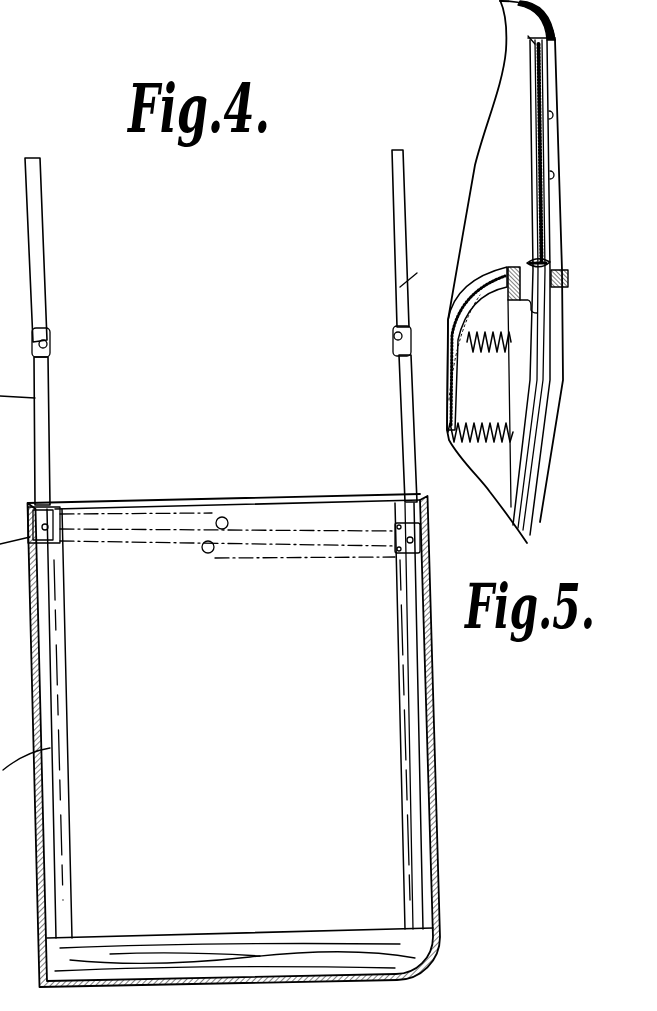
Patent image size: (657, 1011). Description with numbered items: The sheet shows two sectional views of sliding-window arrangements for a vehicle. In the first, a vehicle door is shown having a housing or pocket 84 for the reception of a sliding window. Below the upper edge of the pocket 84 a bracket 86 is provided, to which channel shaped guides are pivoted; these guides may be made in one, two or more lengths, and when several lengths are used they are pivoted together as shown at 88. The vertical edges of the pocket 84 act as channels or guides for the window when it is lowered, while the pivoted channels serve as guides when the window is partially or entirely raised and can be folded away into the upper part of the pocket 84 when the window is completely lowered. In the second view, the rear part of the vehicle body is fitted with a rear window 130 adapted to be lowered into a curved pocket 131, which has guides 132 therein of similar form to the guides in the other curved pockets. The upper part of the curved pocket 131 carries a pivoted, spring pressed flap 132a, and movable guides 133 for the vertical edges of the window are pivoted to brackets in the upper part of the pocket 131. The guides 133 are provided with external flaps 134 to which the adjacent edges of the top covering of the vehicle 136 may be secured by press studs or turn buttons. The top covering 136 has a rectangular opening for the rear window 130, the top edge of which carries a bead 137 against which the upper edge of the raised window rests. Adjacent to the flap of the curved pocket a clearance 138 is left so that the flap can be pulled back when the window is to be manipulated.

In FIG. 4, the housing or pocket 84 is at (302, 837).
In FIG. 4, the bracket 86 is at (422, 548).
In FIG. 4, the pivot of guide lengths 88 is at (50, 337).
In FIG. 5, the rear window 130 is at (532, 97).
In FIG. 5, the curved pocket 131 is at (530, 458).
In FIG. 5, the guides 132 is at (530, 428).
In FIG. 5, the pivoted flap 132a is at (530, 260).
In FIG. 5, the movable guides 133 is at (535, 127).
In FIG. 5, the external flaps 134 is at (540, 178).
In FIG. 5, the top covering of the vehicle 136 is at (535, 10).
In FIG. 5, the bead 137 is at (532, 39).
In FIG. 5, the clearance 138 is at (527, 273).